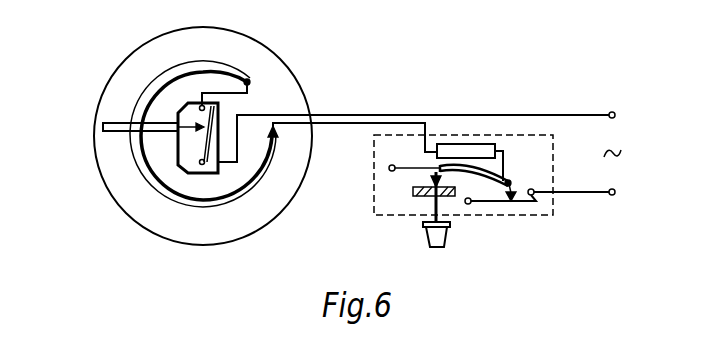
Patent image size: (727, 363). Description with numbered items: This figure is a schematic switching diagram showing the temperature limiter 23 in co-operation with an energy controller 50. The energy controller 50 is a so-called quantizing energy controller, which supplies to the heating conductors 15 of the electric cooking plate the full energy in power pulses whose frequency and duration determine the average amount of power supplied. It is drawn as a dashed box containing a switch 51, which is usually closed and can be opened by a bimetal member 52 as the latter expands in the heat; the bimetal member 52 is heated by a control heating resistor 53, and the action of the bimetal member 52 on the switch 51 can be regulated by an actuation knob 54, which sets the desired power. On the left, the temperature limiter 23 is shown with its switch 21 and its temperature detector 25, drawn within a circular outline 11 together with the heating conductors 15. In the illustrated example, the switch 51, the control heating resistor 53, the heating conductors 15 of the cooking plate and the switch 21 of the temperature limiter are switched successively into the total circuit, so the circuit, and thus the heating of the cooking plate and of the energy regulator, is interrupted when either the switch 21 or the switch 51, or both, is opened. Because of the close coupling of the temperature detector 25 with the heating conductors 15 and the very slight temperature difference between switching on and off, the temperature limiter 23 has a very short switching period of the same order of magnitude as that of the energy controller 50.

The housing 11 is at (103, 185).
The heating conductors 15 is at (205, 208).
The switch of the temperature limiter 21 is at (203, 148).
The temperature limiter 23 is at (236, 105).
The temperature detector 25 is at (103, 132).
The energy controller 50 is at (373, 183).
The switch 51 is at (515, 205).
The bimetal member 52 is at (460, 174).
The control heating resistor 53 is at (465, 144).
The actuation knob 54 is at (437, 248).